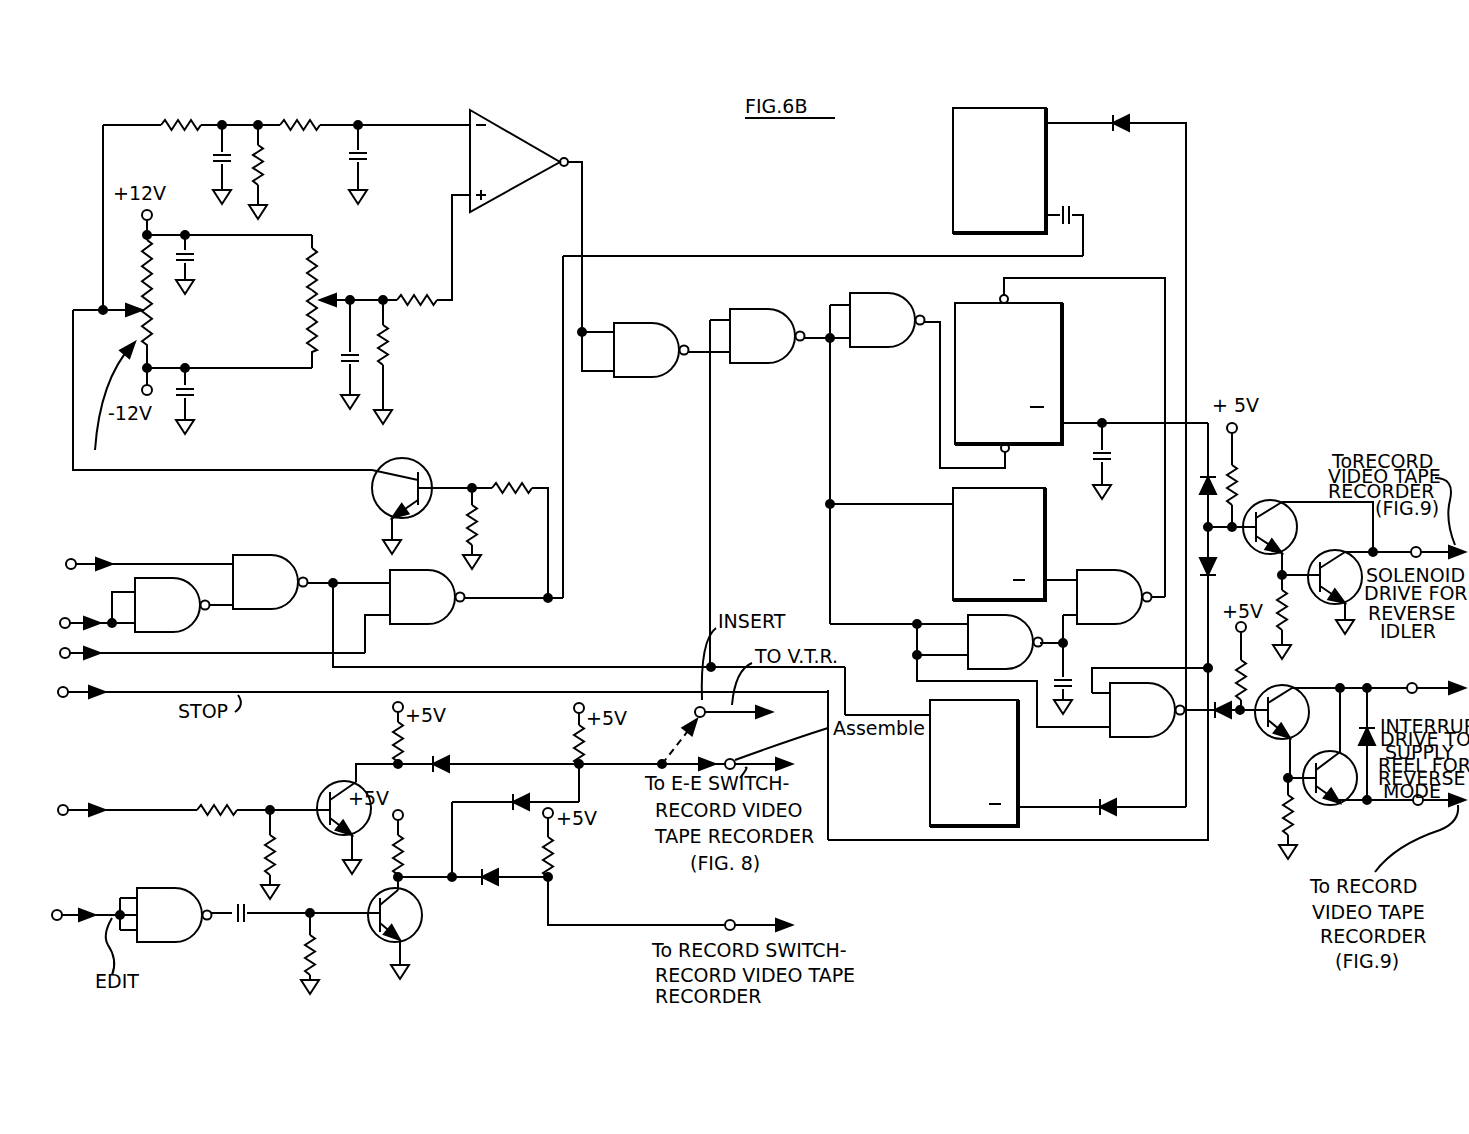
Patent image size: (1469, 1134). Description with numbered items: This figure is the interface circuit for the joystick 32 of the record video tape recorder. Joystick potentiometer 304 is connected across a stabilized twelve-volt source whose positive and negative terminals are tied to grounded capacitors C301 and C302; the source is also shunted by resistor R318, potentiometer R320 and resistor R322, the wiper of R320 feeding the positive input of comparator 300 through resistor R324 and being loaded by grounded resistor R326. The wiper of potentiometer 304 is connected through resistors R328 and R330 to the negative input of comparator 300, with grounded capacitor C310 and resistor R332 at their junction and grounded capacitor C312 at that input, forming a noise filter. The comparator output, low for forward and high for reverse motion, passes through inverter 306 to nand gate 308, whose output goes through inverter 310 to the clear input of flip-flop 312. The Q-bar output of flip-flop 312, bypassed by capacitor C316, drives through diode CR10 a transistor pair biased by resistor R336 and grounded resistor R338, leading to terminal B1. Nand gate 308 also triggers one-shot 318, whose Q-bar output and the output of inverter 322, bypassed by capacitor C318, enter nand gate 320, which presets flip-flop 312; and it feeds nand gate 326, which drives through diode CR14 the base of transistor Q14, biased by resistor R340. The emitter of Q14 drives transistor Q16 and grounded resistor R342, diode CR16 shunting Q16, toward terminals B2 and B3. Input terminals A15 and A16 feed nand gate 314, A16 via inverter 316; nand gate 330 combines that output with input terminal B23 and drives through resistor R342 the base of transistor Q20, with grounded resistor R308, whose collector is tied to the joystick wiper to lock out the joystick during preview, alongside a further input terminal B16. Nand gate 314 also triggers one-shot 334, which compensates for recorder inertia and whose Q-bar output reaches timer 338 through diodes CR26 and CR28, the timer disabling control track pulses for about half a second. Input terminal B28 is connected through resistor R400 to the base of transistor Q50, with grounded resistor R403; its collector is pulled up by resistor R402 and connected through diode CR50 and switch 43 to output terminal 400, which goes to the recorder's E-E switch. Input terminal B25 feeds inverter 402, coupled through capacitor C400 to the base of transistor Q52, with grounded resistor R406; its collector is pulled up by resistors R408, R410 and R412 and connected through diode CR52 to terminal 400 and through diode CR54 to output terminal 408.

The resistor R328 is at (170, 120).
The resistor R330 is at (285, 120).
The capacitor C310 is at (216, 160).
The resistor R332 is at (284, 172).
The capacitor C312 is at (363, 165).
The joystick potentiometer 304 is at (155, 325).
The joystick 32 is at (149, 399).
The capacitor C301 is at (190, 268).
The capacitor C302 is at (192, 392).
The resistor R318 is at (316, 262).
The potentiometer R320 is at (308, 297).
The resistor R322 is at (308, 334).
The resistor R324 is at (430, 290).
The resistor R326 is at (390, 350).
The comparator 300 is at (525, 148).
The inverter 306 is at (630, 378).
The nand gate 308 is at (752, 368).
The inverter 310 is at (872, 352).
The timer circuit 338 is at (1018, 108).
The diode CR28 is at (1132, 118).
The flip-flop 312 is at (1062, 385).
The capacitor C316 is at (1108, 440).
The diode CR10 is at (1198, 490).
The diode CR16 is at (1198, 565).
The resistor R336 is at (1242, 480).
The terminal to record video tape recorder B1 is at (1422, 550).
The resistor R338 is at (1278, 600).
The resistor R340 is at (1250, 682).
The one-shot 318 is at (958, 562).
The inverter 322 is at (975, 630).
The nand gate 320 is at (1108, 612).
The capacitor C318 is at (1070, 700).
The nand gate 326 is at (1135, 740).
The one-shot 334 is at (1005, 790).
The diode CR26 is at (1100, 822).
The diode CR14 is at (1222, 718).
The transistor Q14 is at (1308, 720).
The transistor Q16 is at (1318, 805).
The resistor R342 is at (540, 478).
The terminal B2 is at (1408, 686).
The terminal B3 is at (1418, 806).
The transistor Q20 is at (415, 462).
The resistor R308 is at (478, 520).
The input terminal A15 is at (68, 560).
The input terminal A16 is at (62, 620).
The input terminal B23 is at (68, 650).
The inverter 316 is at (195, 615).
The nand gate 314 is at (250, 565).
The nand gate 330 is at (455, 615).
The stop input terminal B16 is at (60, 700).
The switch 43 is at (685, 735).
The output terminal 400 is at (752, 742).
The input terminal B28 is at (65, 805).
The resistor R400 is at (248, 775).
The resistor R403 is at (262, 850).
The transistor Q50 is at (343, 770).
The resistor R402 is at (392, 735).
The diode CR50 is at (445, 756).
The resistor R408 is at (584, 735).
The diode CR52 is at (516, 795).
The resistor R410 is at (410, 835).
The diode CR54 is at (485, 884).
The resistor R412 is at (555, 852).
The output terminal 408 is at (735, 900).
The input terminal B25 is at (58, 922).
The inverter 402 is at (160, 932).
The capacitor C400 is at (236, 920).
The resistor R406 is at (316, 955).
The transistor Q52 is at (412, 930).